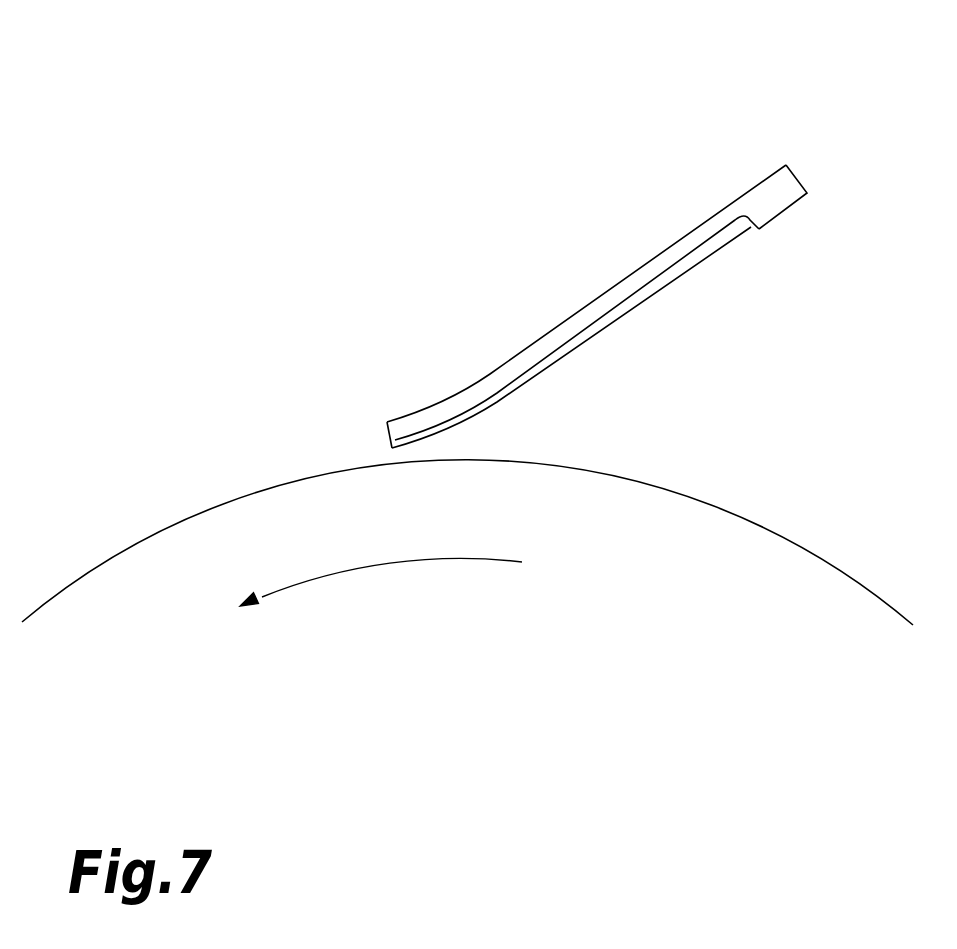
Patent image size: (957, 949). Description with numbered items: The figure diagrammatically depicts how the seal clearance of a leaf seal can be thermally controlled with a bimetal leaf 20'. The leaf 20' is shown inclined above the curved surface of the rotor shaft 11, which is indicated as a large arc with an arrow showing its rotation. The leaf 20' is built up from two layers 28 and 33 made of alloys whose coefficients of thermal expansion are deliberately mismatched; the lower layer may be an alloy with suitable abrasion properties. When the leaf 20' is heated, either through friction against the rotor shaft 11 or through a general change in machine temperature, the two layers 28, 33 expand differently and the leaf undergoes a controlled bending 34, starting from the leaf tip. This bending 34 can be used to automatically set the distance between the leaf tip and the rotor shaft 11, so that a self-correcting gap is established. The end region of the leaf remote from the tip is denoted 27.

The rotor shaft 11 is at (749, 630).
The bimetal leaf 20' is at (500, 232).
The bent end piece of strip 27 is at (767, 192).
The layer 28 is at (622, 285).
The layer 33 is at (618, 317).
The bending 34 is at (372, 388).